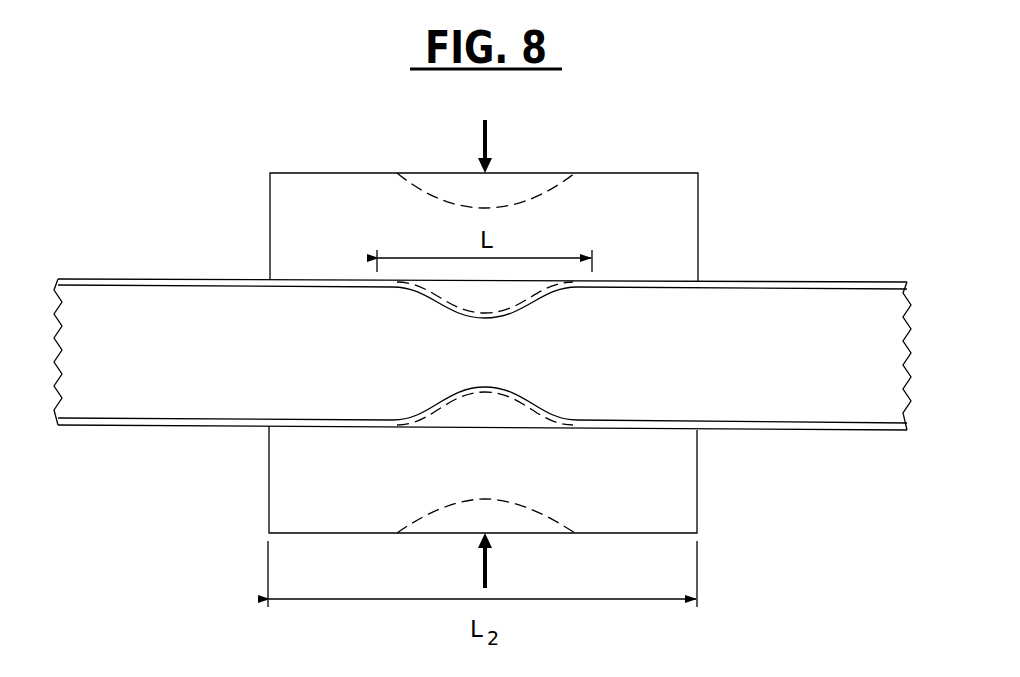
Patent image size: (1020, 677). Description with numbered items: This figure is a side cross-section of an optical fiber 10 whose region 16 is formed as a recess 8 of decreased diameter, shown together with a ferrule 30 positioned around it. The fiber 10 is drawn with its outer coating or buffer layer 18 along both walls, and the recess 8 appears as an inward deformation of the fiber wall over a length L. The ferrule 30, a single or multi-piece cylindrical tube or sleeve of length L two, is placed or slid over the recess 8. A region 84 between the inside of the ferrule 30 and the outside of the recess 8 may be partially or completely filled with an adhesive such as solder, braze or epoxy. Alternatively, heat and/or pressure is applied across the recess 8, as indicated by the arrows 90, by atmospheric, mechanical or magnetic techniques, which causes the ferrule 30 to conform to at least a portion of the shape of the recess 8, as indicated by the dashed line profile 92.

The recess 8 is at (485, 353).
The optical waveguide 10 is at (482, 349).
The region 16 is at (452, 391).
The buffer layer 18 is at (193, 278).
The ferrule 30 is at (266, 193).
The region 84 is at (493, 301).
The arrows 90 is at (488, 135).
The dashed line profile 92 is at (537, 298).